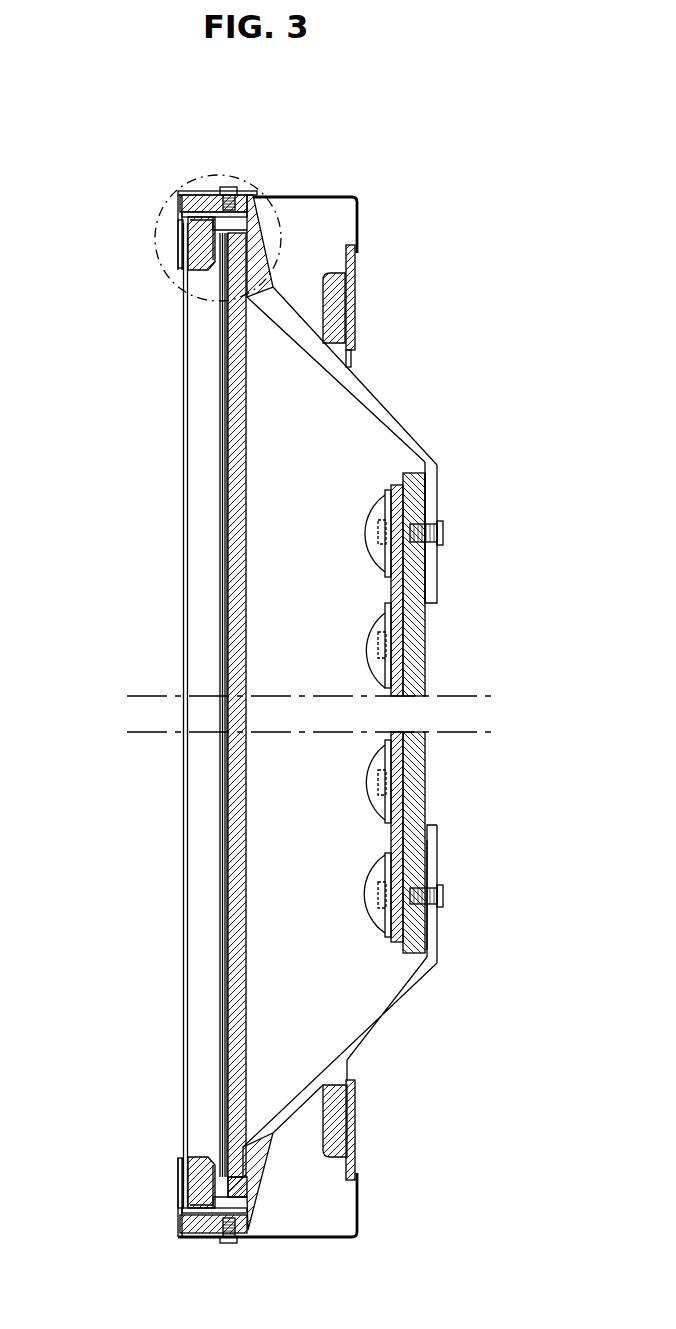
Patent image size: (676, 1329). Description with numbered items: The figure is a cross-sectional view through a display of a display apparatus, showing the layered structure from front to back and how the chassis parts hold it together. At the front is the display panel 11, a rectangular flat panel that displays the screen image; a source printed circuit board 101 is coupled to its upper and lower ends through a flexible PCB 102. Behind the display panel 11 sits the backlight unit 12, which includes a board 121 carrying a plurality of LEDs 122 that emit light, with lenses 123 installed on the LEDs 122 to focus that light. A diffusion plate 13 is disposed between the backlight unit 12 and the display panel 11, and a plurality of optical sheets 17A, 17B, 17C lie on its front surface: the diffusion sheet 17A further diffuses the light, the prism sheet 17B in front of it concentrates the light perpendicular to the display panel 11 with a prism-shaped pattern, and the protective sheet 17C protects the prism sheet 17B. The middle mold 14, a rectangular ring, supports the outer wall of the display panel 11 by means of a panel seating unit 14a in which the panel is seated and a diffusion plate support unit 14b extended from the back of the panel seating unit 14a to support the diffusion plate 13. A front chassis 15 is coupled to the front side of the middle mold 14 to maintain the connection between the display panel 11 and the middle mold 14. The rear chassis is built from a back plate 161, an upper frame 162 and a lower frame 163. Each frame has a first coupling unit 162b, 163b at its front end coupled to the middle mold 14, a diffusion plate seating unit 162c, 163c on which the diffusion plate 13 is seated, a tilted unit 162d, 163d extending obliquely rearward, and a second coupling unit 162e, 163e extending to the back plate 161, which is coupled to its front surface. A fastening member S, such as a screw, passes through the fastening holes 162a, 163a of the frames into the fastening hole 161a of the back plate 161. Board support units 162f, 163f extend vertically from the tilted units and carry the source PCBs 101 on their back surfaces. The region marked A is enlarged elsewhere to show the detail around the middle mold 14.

The display panel 11 is at (183, 462).
The backlight unit 12 is at (345, 712).
The board 121 is at (390, 621).
The light emitting diodes 122 is at (379, 532).
The lenses 123 is at (372, 508).
The diffusion plate 13 is at (235, 444).
The middle mold 14 is at (200, 277).
The panel seating unit 14a is at (196, 254).
The diffusion plate support unit 14b is at (186, 232).
The front chassis 15 is at (193, 190).
The diffusion sheet 17A is at (225, 922).
The prism sheet 17B is at (224, 874).
The protective sheet 17C is at (223, 823).
The source printed circuit board 101 is at (357, 298).
The flexible PCB 102 is at (310, 196).
The back plate 161 is at (458, 713).
The fastening hole 161a is at (420, 527).
The upper frame 162 is at (382, 445).
The fastening hole 162a is at (443, 541).
The first coupling unit 162b is at (258, 200).
The diffusion plate seating unit 162c is at (263, 245).
The tilted unit 162d is at (415, 434).
The second coupling unit 162e is at (433, 480).
The board support unit 162f is at (338, 323).
The lower frame 163 is at (381, 981).
The fastening hole 163a is at (444, 905).
The first coupling unit 163b is at (197, 1240).
The diffusion plate seating unit 163c is at (257, 1180).
The tilted unit 163d is at (374, 1030).
The second coupling unit 163e is at (433, 838).
The board support unit 163f is at (332, 1113).
The fastening member S is at (446, 532).
The detail region A is at (235, 176).